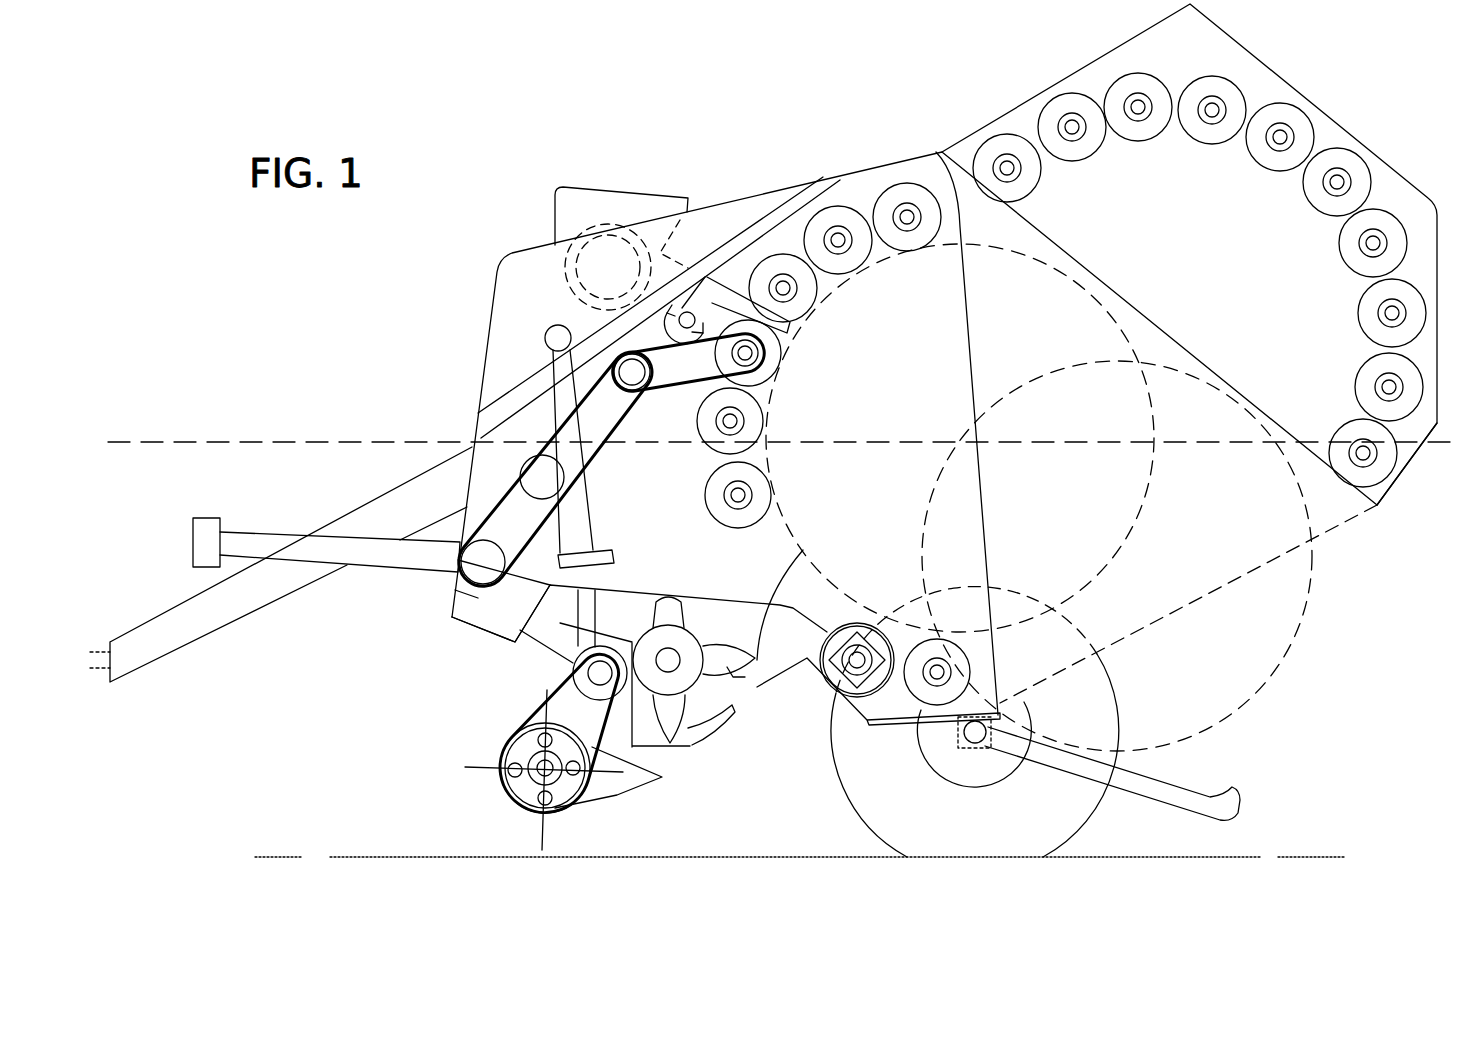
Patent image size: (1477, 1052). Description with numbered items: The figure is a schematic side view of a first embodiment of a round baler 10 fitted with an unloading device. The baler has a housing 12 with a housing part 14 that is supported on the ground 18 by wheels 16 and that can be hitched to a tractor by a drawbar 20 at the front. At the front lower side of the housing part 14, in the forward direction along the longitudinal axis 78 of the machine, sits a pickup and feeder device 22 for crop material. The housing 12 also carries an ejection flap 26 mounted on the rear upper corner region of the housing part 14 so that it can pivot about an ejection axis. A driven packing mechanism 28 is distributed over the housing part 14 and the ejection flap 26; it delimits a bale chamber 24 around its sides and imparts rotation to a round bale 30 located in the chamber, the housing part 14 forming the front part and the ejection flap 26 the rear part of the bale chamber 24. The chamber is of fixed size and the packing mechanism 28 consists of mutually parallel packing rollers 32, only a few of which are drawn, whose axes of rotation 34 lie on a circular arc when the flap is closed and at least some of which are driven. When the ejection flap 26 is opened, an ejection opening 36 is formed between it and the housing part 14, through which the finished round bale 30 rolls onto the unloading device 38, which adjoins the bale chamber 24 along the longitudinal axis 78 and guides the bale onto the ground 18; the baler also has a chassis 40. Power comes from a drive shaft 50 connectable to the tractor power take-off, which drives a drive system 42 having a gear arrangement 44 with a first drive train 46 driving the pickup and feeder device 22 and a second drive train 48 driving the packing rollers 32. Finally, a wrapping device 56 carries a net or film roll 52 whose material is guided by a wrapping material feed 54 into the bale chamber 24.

The round baler 10 is at (448, 363).
The housing 12 is at (858, 157).
The housing part 14 is at (865, 410).
The wheels 16 is at (900, 797).
The ground 18 is at (1140, 858).
The drawbar 20 is at (217, 612).
The pickup and feeder device 22 is at (522, 788).
The bale chamber 24 is at (852, 523).
The ejection flap 26 is at (1250, 243).
The packing mechanism 28 is at (1103, 87).
The round bale 30 is at (1227, 648).
The packing rollers 32 is at (850, 210).
The axes of rotation 34 is at (1072, 130).
The ejection opening 36 is at (1350, 553).
The unloading device 38 is at (1137, 787).
The chassis 40 is at (885, 737).
The drive system 42 is at (472, 643).
The gear arrangement 44 is at (472, 602).
The first drive train 46 is at (580, 660).
The second drive train 48 is at (537, 478).
The drive shaft 50 is at (243, 547).
The net or film roll 52 is at (602, 253).
The wrapping material feed 54 is at (667, 337).
The wrapping device 56 is at (700, 228).
The longitudinal axis 78 is at (312, 440).